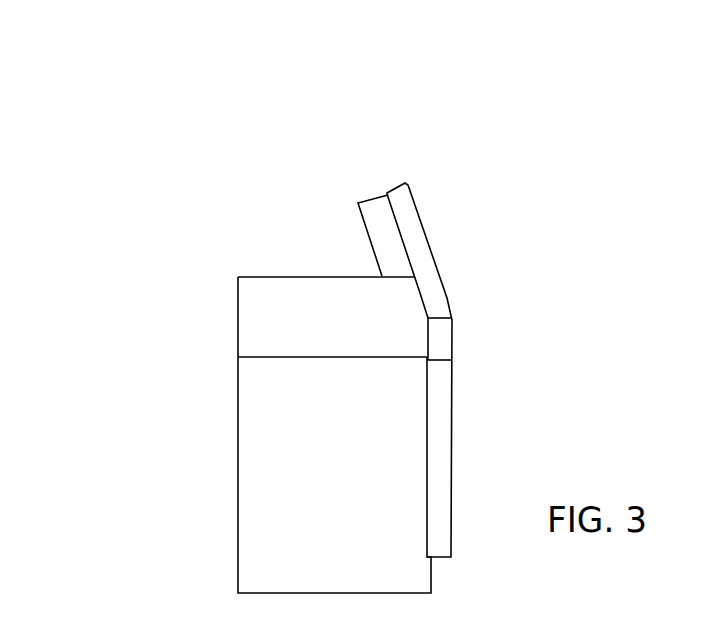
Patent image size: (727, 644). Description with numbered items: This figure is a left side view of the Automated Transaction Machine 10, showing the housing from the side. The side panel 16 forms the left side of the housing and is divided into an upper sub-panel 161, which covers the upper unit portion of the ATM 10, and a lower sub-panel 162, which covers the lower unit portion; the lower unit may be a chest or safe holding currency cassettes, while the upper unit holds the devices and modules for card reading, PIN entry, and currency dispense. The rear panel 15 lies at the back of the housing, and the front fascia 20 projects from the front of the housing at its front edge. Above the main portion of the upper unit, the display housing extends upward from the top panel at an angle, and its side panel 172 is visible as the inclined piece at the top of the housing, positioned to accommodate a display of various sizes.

The Automated Transaction Machine 10 is at (303, 126).
The rear panel 15 is at (182, 491).
The side panel 16 is at (332, 475).
The sub-panel 161 is at (262, 327).
The sub-panel 162 is at (258, 562).
The side panel 172 is at (387, 248).
The front fascia 20 is at (540, 399).